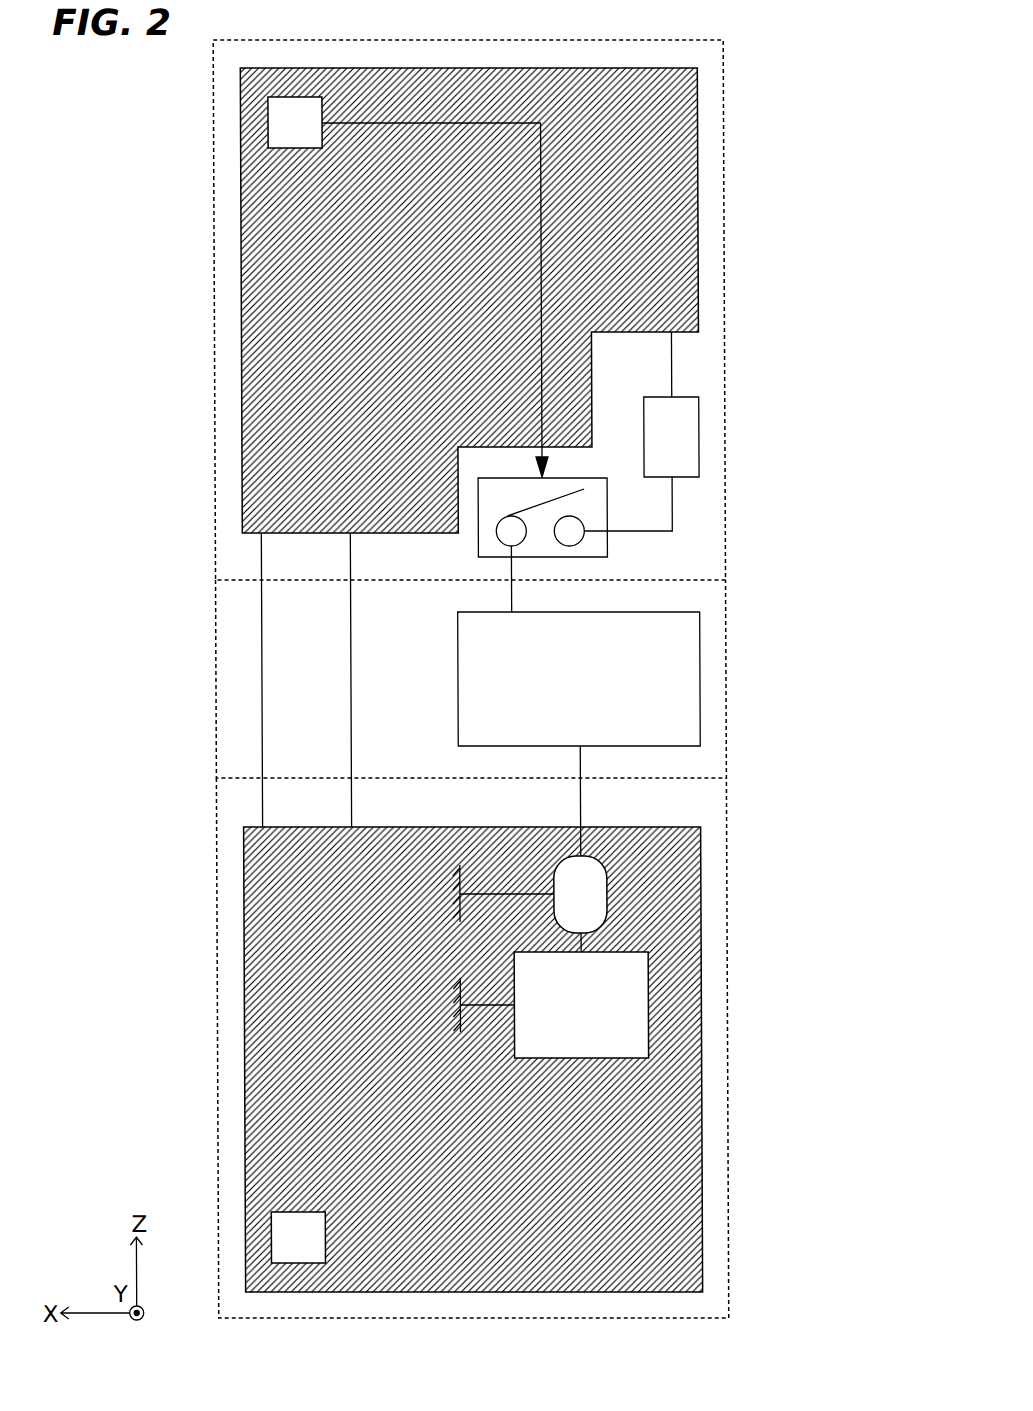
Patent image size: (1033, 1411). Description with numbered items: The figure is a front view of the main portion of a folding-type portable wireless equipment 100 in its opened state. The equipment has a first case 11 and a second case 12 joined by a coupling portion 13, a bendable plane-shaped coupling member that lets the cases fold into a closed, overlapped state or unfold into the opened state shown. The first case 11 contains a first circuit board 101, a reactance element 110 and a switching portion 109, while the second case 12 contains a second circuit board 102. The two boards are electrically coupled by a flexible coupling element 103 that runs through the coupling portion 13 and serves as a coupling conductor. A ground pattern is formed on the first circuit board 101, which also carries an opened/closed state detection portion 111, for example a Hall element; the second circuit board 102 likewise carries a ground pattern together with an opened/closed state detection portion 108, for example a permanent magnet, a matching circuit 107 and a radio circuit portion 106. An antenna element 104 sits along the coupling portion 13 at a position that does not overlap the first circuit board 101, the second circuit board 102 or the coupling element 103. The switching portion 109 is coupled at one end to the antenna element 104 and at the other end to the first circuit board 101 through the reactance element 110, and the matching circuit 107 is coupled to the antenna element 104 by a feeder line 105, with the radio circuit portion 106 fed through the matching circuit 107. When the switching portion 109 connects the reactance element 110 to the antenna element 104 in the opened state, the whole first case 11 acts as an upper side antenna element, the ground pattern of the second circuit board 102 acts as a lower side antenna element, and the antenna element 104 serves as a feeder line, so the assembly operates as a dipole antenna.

The folding-type portable wireless equipment 100 is at (538, 679).
The first case 11 is at (723, 312).
The second case 12 is at (723, 1043).
The coupling portion 13 is at (722, 678).
The first circuit board 101 is at (261, 298).
The second circuit board 102 is at (263, 1032).
The coupling element 103 is at (265, 675).
The antenna element 104 is at (697, 639).
The feeder line 105 is at (577, 812).
The radio circuit portion 106 is at (616, 1000).
The matching circuit 107 is at (585, 887).
The opened/closed state detection portion 108 is at (277, 1241).
The switching portion 109 is at (582, 477).
The reactance element 110 is at (697, 435).
The opened/closed state detection portion 111 is at (242, 115).